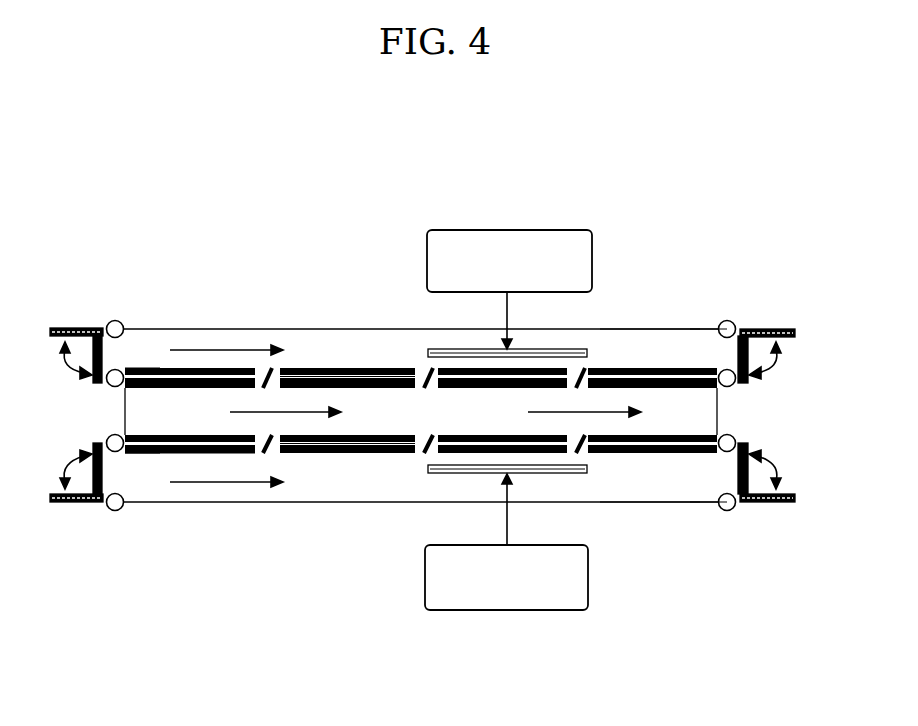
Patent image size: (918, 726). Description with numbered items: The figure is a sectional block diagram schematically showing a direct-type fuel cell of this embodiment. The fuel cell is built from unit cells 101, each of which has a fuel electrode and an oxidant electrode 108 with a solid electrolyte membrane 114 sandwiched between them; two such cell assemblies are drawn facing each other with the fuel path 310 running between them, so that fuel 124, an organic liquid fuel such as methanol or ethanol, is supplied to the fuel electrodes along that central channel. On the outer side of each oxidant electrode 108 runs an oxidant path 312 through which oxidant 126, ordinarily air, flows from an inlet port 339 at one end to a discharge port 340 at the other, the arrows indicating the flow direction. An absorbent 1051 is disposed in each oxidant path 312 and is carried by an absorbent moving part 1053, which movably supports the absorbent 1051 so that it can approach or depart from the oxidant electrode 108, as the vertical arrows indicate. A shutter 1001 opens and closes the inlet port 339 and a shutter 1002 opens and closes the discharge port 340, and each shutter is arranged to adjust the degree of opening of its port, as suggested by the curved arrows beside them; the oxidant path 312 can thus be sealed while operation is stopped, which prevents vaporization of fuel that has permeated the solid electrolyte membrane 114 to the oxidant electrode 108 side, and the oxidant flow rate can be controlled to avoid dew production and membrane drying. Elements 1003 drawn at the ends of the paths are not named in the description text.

The unit cell 101 is at (307, 362).
The oxidant electrode 108 is at (323, 367).
The solid electrolyte membrane 114 is at (360, 370).
The fuel 124 is at (180, 435).
The oxidant 126 is at (240, 332).
The fuel path 310 is at (143, 418).
The oxidant path 312 is at (648, 335).
The inlet port 339 is at (130, 355).
The discharge port 340 is at (703, 355).
The shutter 1001 is at (86, 326).
The shutter 1002 is at (759, 328).
The roller 1003 is at (112, 322).
The absorbent 1051 is at (535, 349).
The absorbent moving part 1053 is at (505, 230).